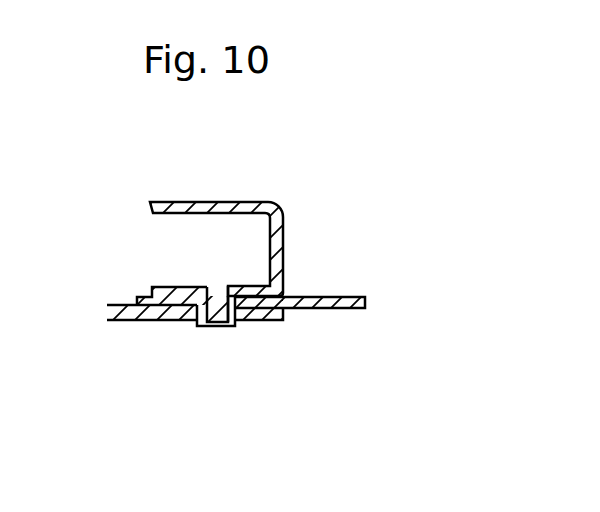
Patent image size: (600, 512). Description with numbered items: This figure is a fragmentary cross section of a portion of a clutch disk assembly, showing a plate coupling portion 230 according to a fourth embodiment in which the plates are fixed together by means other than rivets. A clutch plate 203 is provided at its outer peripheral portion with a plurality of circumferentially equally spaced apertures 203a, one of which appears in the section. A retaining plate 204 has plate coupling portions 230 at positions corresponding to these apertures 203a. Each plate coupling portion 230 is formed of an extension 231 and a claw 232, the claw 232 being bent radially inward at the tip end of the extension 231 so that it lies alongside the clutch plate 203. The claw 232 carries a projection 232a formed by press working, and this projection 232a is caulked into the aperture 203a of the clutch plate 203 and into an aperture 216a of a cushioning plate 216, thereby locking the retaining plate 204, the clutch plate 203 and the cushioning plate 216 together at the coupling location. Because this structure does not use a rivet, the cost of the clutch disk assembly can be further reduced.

The clutch plate 203 is at (146, 313).
The aperture 203a is at (229, 328).
The retaining plate 204 is at (208, 200).
The cushioning plate 216 is at (352, 297).
The aperture 216a is at (217, 297).
The plate coupling portion 230 is at (285, 190).
The extension 231 is at (284, 249).
The claw 232 is at (167, 285).
The projection 232a is at (218, 327).